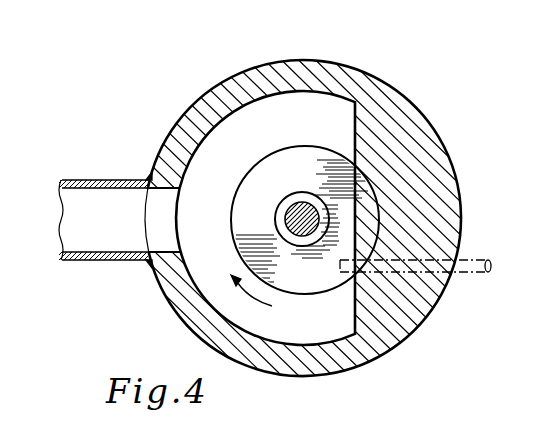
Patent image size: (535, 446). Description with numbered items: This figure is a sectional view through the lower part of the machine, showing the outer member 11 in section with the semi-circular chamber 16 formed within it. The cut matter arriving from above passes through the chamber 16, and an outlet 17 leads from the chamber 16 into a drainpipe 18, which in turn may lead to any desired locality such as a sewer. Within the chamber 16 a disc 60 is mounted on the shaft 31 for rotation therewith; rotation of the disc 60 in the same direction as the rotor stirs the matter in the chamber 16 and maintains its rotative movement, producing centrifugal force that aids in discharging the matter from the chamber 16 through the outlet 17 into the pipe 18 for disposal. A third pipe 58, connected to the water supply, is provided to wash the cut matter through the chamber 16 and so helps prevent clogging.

The outer member 11 is at (390, 109).
The semi-circular chamber 16 is at (205, 285).
The outlet 17 is at (165, 219).
The drainpipe 18 is at (97, 180).
The shaft 31 is at (292, 212).
The third pipe 58 is at (462, 257).
The disc 60 is at (299, 163).